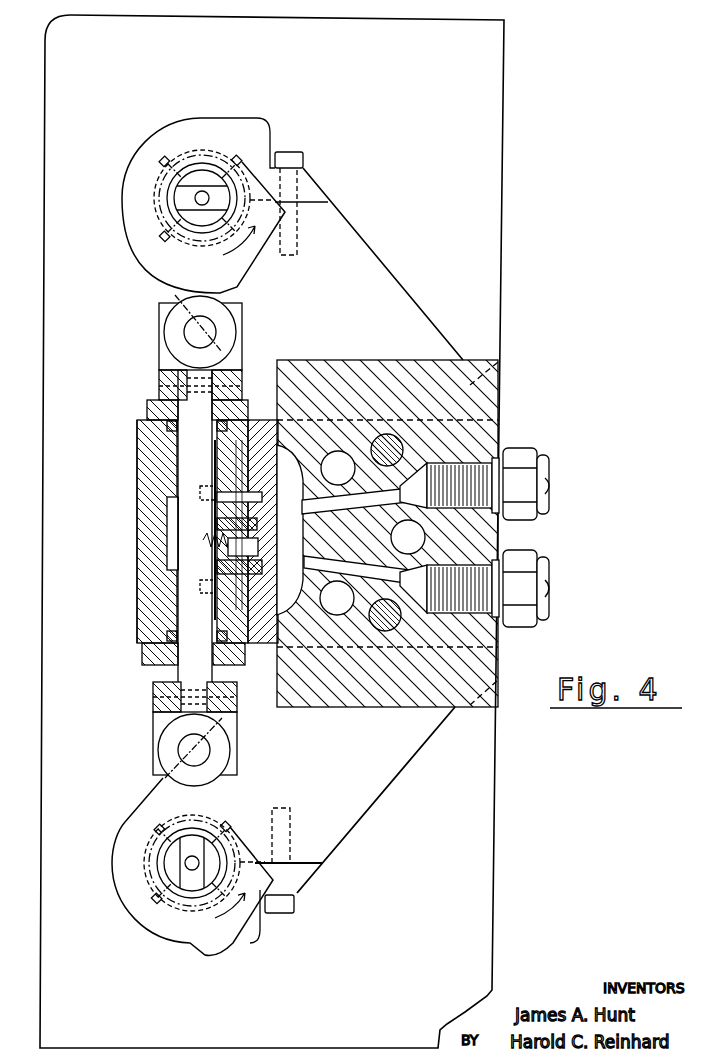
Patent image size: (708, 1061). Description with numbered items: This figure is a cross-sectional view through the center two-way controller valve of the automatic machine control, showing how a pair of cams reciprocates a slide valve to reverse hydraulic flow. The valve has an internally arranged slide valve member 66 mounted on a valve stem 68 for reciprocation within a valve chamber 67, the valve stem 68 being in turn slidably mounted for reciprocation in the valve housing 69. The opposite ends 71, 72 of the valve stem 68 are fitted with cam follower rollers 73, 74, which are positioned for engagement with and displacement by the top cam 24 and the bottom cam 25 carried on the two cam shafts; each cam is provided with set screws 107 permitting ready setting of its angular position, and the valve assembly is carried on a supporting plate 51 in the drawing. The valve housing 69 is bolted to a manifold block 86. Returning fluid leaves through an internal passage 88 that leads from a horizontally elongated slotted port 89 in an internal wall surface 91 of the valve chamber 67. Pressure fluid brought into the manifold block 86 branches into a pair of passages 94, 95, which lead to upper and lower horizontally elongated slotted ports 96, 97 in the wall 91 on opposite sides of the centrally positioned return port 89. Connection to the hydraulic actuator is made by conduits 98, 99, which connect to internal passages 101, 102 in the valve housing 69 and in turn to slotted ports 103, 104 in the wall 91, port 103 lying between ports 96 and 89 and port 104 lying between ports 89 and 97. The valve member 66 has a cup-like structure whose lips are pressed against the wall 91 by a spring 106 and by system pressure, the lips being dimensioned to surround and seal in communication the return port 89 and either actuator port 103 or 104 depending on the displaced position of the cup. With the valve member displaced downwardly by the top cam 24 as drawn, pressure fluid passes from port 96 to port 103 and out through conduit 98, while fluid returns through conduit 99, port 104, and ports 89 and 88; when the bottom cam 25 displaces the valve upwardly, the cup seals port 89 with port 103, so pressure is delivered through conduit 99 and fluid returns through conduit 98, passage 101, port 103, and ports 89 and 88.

The cam 24 is at (243, 262).
The cam 25 is at (228, 935).
The mounting plate 51 is at (411, 120).
The slide valve member 66 is at (228, 586).
The valve chamber 67 is at (168, 505).
The valve stem 68 is at (185, 447).
The valve housing 69 is at (158, 595).
The end of valve stem 71 is at (190, 408).
The end of valve stem 72 is at (190, 672).
The cam follower roller 73 is at (172, 328).
The cam follower roller 74 is at (165, 748).
The manifold block 86 is at (470, 405).
The internal passage 88 is at (420, 543).
The slotted port 89 is at (228, 525).
The internal wall surface 91 is at (218, 486).
The passage 94 is at (341, 452).
The passage 95 is at (345, 615).
The slotted port 96 is at (201, 530).
The slotted port 97 is at (217, 531).
The conduit 98 is at (538, 458).
The conduit 99 is at (538, 566).
The internal passage 101 is at (392, 465).
The internal passage 102 is at (398, 631).
The slotted port 103 is at (228, 506).
The slotted port 104 is at (230, 560).
The spring 106 is at (180, 538).
The set screws 107 is at (168, 158).